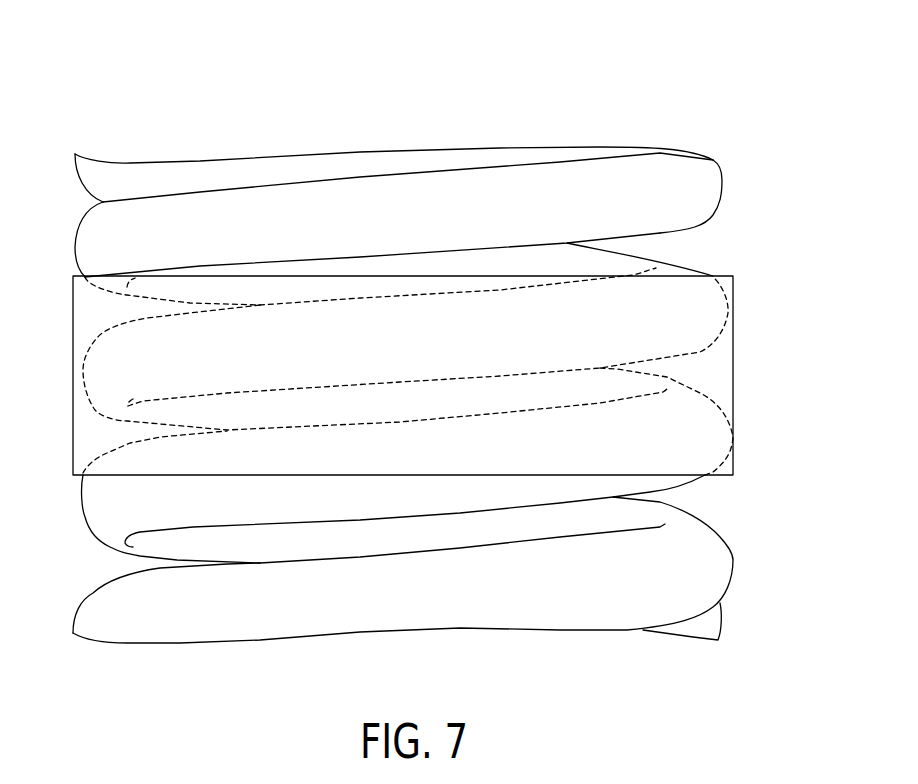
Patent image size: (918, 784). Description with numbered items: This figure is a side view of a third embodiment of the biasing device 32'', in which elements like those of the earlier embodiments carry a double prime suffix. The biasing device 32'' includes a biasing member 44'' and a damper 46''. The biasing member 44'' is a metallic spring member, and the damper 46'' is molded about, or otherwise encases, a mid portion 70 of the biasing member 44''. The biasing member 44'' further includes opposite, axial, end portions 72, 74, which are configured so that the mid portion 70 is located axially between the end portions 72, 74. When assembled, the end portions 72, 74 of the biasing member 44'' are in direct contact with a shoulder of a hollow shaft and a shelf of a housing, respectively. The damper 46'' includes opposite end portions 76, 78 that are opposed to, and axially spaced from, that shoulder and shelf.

The biasing device 32'' is at (422, 361).
The end portion 72 is at (195, 177).
The biasing member 44'' is at (731, 196).
The end portion 76 is at (382, 277).
The damper 46'' is at (445, 375).
The mid portion 70 is at (128, 405).
The end portion 78 is at (132, 477).
The end portion 74 is at (185, 632).